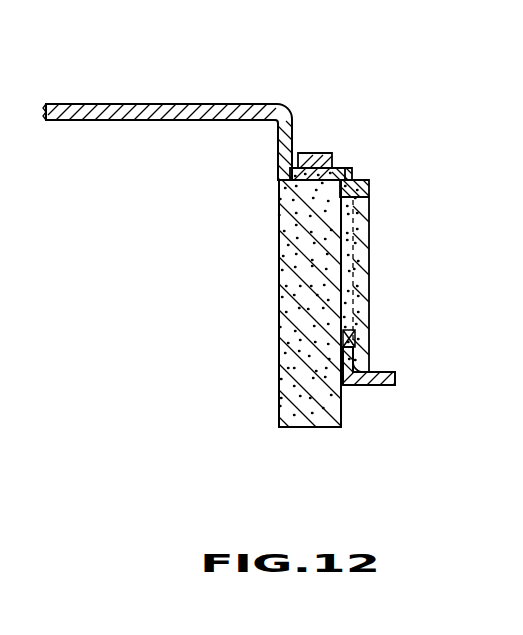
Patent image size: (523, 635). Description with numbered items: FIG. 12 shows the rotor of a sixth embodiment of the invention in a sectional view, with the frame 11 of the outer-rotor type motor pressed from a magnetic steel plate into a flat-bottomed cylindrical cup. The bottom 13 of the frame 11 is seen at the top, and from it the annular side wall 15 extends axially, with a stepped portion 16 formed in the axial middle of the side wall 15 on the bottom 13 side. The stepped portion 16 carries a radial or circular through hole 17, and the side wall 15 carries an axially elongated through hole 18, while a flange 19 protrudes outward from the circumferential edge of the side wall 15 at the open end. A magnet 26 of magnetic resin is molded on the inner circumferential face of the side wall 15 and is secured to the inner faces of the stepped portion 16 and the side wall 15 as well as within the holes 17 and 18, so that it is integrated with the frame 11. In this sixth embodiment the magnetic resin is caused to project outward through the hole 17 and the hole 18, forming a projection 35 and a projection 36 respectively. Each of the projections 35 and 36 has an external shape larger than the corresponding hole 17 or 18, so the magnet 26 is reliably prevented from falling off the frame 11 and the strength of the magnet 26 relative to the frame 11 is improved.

The frame 11 is at (258, 85).
The bottom 13 is at (116, 104).
The side wall 15 is at (366, 354).
The stepped portion 16 is at (353, 179).
The through hole 17 is at (326, 168).
The through hole 18 is at (355, 332).
The flange 19 is at (380, 385).
The magnet 26 is at (279, 290).
The projection 35 is at (306, 152).
The projection 36 is at (368, 258).